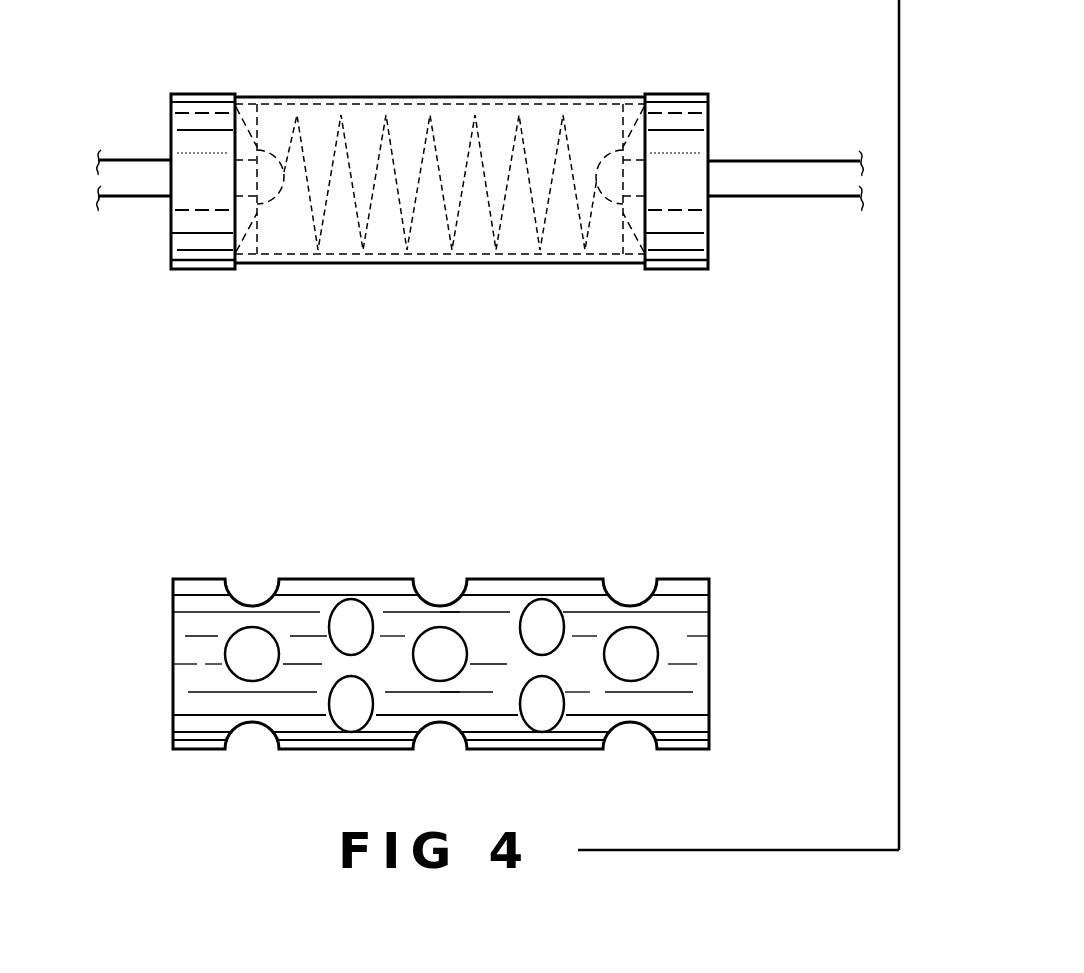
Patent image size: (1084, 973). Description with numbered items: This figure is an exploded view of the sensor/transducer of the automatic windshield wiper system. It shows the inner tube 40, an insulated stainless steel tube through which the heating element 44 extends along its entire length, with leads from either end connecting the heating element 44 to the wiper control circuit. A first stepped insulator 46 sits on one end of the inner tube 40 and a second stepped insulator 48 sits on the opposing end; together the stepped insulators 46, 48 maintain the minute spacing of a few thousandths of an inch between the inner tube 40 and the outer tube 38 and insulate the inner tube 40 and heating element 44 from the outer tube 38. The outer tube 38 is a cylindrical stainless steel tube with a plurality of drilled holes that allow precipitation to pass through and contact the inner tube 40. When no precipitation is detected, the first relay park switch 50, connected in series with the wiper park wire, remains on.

The outer tube 38 is at (467, 633).
The inner tube 40 is at (480, 217).
The heating element 44 is at (448, 230).
The first stepped insulator 46 is at (183, 108).
The second stepped insulator 48 is at (657, 108).
The first relay park switch 50 is at (547, 617).